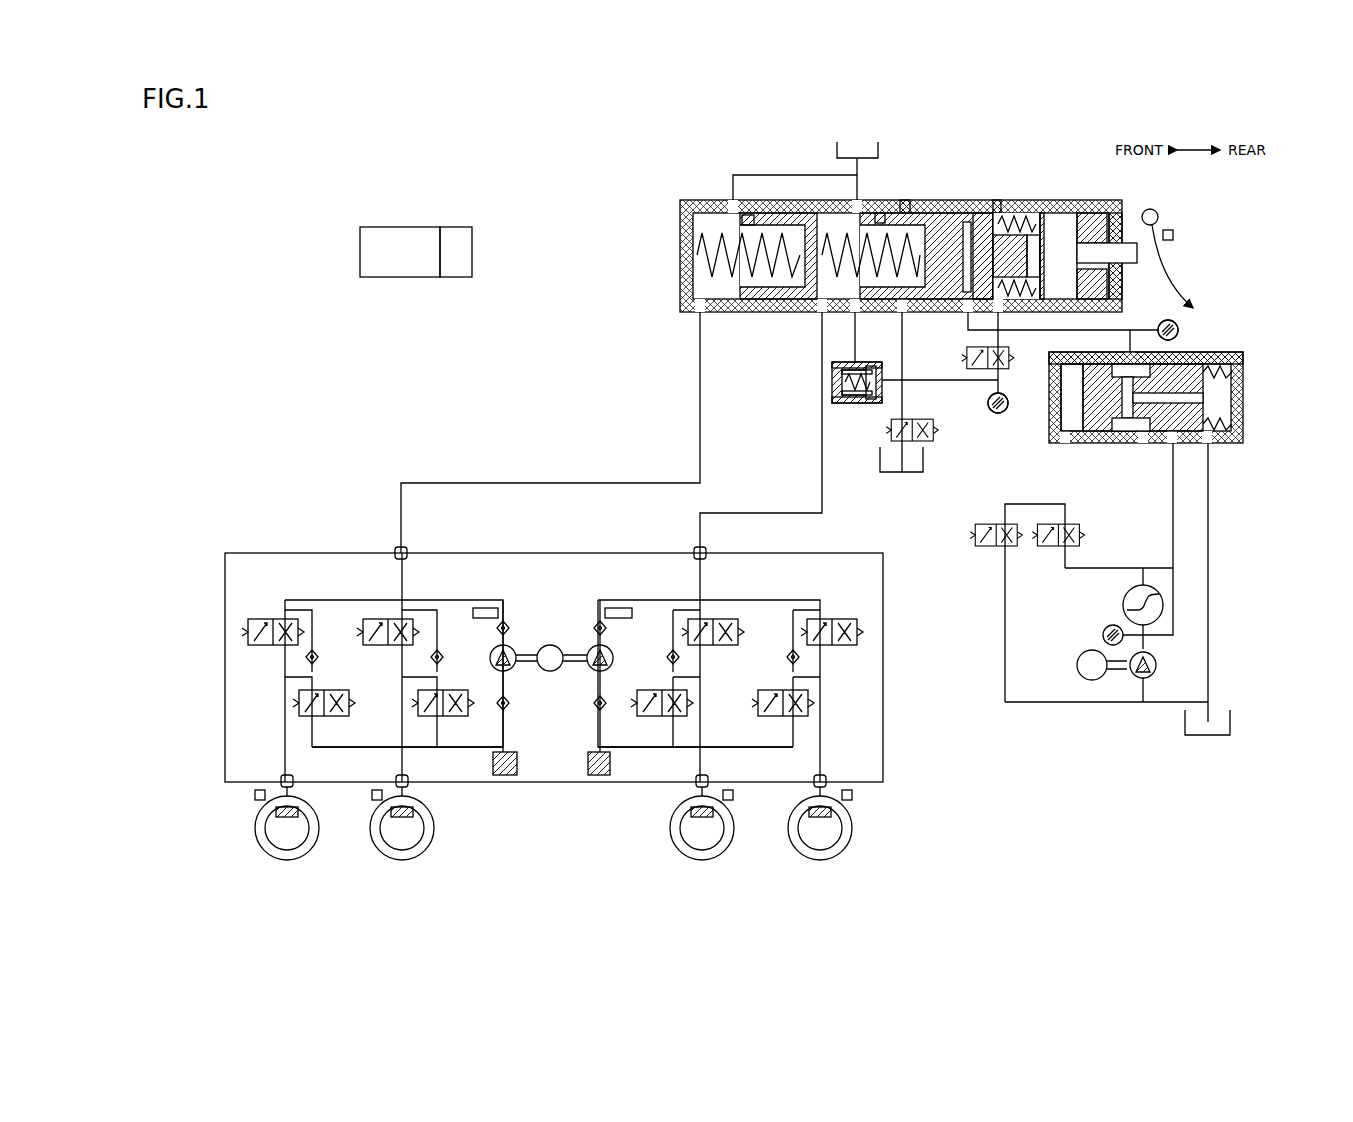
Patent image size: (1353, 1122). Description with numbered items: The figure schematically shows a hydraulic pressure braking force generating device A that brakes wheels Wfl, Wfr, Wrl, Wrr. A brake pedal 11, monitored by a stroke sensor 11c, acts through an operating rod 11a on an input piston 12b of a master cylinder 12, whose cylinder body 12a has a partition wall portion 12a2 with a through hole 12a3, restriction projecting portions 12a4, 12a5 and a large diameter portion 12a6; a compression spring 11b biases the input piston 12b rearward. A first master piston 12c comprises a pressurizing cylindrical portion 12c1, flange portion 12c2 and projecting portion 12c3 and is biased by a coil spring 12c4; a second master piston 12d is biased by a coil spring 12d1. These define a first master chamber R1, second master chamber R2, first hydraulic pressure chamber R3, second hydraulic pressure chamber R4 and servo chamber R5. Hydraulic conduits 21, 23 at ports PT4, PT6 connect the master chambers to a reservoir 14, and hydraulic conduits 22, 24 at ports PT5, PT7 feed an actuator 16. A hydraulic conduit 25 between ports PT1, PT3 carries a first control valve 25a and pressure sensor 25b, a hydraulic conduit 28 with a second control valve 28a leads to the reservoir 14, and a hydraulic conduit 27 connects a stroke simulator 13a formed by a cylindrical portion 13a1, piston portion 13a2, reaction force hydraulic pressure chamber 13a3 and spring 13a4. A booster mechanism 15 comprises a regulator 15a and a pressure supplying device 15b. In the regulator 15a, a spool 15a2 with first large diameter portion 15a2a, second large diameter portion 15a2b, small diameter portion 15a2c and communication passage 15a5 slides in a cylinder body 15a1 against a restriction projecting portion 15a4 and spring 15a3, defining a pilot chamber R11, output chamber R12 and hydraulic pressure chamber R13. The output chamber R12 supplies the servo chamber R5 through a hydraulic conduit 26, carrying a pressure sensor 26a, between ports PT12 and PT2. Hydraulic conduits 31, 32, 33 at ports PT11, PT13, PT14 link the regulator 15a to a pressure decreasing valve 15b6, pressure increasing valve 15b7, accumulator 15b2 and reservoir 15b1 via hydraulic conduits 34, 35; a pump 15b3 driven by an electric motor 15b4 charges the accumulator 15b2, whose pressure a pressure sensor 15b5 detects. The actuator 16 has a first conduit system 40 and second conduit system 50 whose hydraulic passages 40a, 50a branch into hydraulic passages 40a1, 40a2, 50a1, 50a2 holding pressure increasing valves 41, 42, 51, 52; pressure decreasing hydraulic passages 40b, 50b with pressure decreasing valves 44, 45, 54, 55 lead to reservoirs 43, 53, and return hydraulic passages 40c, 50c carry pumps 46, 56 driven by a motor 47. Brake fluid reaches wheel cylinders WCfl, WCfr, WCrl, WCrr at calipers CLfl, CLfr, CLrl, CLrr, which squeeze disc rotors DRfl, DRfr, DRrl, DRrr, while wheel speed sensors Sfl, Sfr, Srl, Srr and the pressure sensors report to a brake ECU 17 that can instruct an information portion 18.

The vehicle brake device A is at (523, 163).
The brake pedal 11 is at (1170, 275).
The operating rod 11a is at (1140, 253).
The return spring 11b is at (1015, 214).
The stroke sensor 11c is at (1175, 235).
The master cylinder 12 is at (899, 238).
The main cylinder 12a is at (692, 252).
The cylinder partition portion 12a2 is at (1003, 234).
The cylinder inner wall portion 12a3 is at (1033, 234).
The cylinder rear end portion 12a4 is at (1108, 183).
The cylinder seal 12a5 is at (996, 199).
The cylinder seal 12a6 is at (910, 183).
The input piston 12b is at (1072, 212).
The first master piston 12c is at (878, 300).
The first piston seal 12c1 is at (880, 212).
The first piston flange 12c2 is at (982, 212).
The first piston rear end 12c3 is at (1048, 212).
The first piston projection 12c4 is at (854, 356).
The second master piston 12d is at (770, 300).
The second piston seal 12d1 is at (755, 312).
The stroke simulator 13a is at (857, 405).
The simulator piston 13a1 is at (840, 393).
The simulator body 13a2 is at (832, 401).
The simulator cover 13a3 is at (840, 370).
The simulator spring 13a4 is at (842, 381).
The reservoir 14 is at (836, 151).
The servo pressure generating device 15 is at (1298, 512).
The regulator 15a is at (1172, 414).
The regulator rod 15a1 is at (1240, 400).
The regulator piston 15a2 is at (1233, 372).
The piston passage 15a2a is at (1235, 450).
The piston passage 15a2b is at (1118, 445).
The piston passage 15a2c is at (1178, 445).
The regulator housing 15a3 is at (1225, 352).
The regulator sub piston 15a4 is at (1088, 432).
The regulator spring 15a5 is at (1240, 385).
The pressure supply device 15b is at (1235, 587).
The reservoir 15b1 is at (1232, 722).
The accumulator 15b2 is at (1123, 605).
The pump 15b3 is at (1156, 662).
The electric motor 15b4 is at (1076, 662).
The check valve 15b5 is at (1102, 634).
The pressure reducing valve 15b6 is at (990, 550).
The pressure increasing valve 15b7 is at (1052, 550).
The brake actuator 16 is at (815, 552).
The brake ECU 17 is at (402, 226).
The memory 18 is at (447, 226).
The pipe 21 is at (855, 160).
The pipe 22 is at (765, 512).
The pipe 23 is at (755, 174).
The pipe 24 is at (538, 482).
The pressure sensor 25 is at (988, 403).
The simulator cut valve 25a is at (1009, 362).
The pressure sensor 25b is at (1006, 400).
The pressure sensor 26 is at (1120, 330).
The pressure sensor 26a is at (1180, 328).
The pipe 27 is at (896, 382).
The valve 28 is at (915, 417).
The valve 28a is at (930, 440).
The pipe 31 is at (1058, 503).
The pipe 32 is at (1174, 555).
The pipe 33 is at (1210, 642).
The pipe 34 is at (1004, 620).
The pipe 35 is at (1110, 568).
The rear brake circuit 40 is at (795, 585).
The pipe 40a is at (702, 585).
The pipe 40a1 is at (702, 683).
The pipe 40a2 is at (822, 683).
The pipe 40b is at (725, 745).
The pipe 40c is at (612, 686).
The holding valve 41 is at (738, 620).
The holding valve 42 is at (832, 617).
The pressure regulating reservoir 43 is at (599, 777).
The pressure reducing valve 44 is at (660, 689).
The pressure reducing valve 45 is at (780, 689).
The pump 46 is at (606, 650).
The motor 47 is at (550, 644).
The front brake circuit 50 is at (283, 585).
The pipe 50a is at (400, 585).
The pipe 50a1 is at (407, 683).
The pipe 50a2 is at (285, 682).
The pipe 50b is at (373, 745).
The pipe 50c is at (500, 695).
The holding valve 51 is at (365, 622).
The holding valve 52 is at (273, 617).
The pressure regulating reservoir 53 is at (504, 777).
The pressure reducing valve 54 is at (443, 689).
The pressure reducing valve 55 is at (323, 689).
The pump 56 is at (495, 655).
The first master chamber R1 is at (840, 300).
The second master chamber R2 is at (732, 300).
The servo chamber R3 is at (1038, 352).
The reaction force chamber R4 is at (906, 313).
The separation chamber R5 is at (966, 314).
The pilot chamber R11 is at (1050, 425).
The regulator chamber R12 is at (1143, 444).
The spring chamber R13 is at (1240, 424).
The port PT1 is at (1000, 313).
The port PT2 is at (947, 357).
The port PT3 is at (858, 313).
The port PT4 is at (853, 201).
The port PT5 is at (820, 313).
The port PT6 is at (730, 201).
The port PT7 is at (698, 313).
The port PT11 is at (1062, 445).
The port PT12 is at (1128, 350).
The port PT13 is at (1178, 448).
The port PT14 is at (1212, 445).
The front left wheel Wfl is at (265, 858).
The front right wheel Wfr is at (382, 858).
The rear left wheel Wrl is at (724, 858).
The rear right wheel Wrr is at (842, 858).
The wheel speed sensor Sfl is at (253, 796).
The wheel speed sensor Sfr is at (370, 796).
The wheel speed sensor Srl is at (735, 796).
The wheel speed sensor Srr is at (854, 796).
The caliper CLfl is at (275, 812).
The caliper CLfr is at (390, 812).
The caliper CLrl is at (714, 812).
The caliper CLrr is at (832, 812).
The wheel cylinder WCfl is at (256, 830).
The wheel cylinder WCfr is at (371, 830).
The wheel cylinder WCrl is at (733, 830).
The wheel cylinder WCrr is at (851, 830).
The brake disc DRfl is at (262, 843).
The brake disc DRfr is at (377, 843).
The brake disc DRrl is at (727, 843).
The brake disc DRrr is at (845, 843).